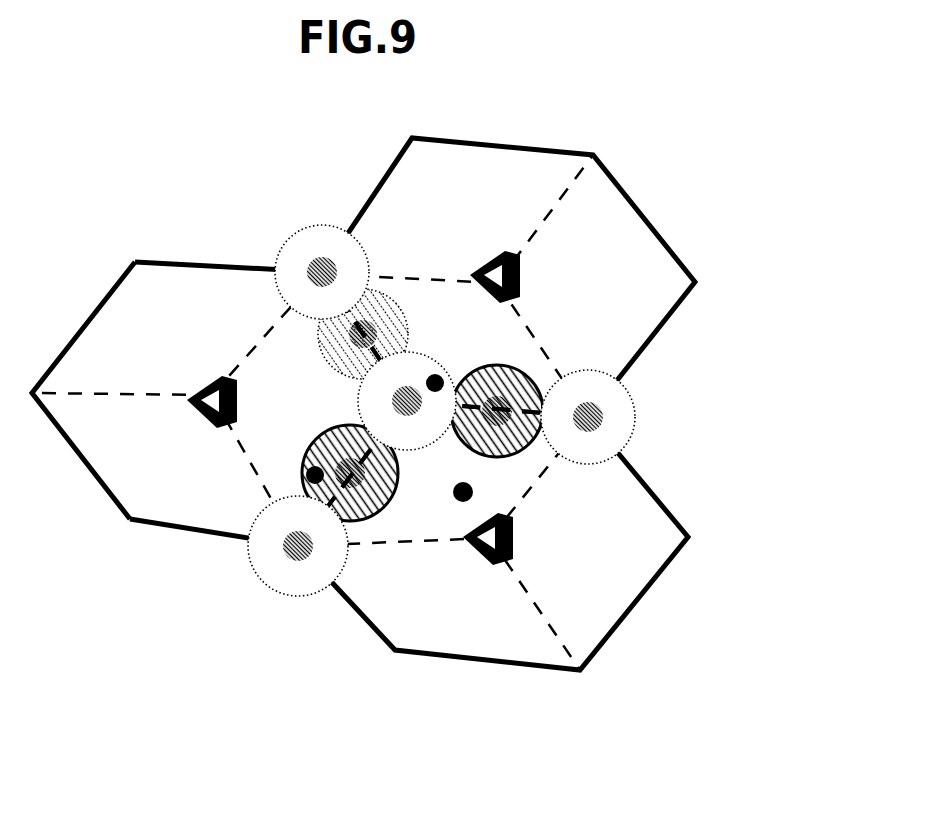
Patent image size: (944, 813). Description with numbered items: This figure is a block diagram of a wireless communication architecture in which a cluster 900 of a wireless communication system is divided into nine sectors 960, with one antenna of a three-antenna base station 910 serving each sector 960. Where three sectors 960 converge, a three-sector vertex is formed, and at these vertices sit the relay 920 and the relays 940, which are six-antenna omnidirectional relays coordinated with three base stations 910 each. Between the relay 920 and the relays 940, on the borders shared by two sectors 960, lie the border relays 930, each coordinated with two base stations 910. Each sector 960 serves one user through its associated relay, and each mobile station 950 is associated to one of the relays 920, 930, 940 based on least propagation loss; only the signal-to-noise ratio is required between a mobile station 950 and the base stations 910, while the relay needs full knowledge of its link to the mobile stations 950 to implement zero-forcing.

The cluster 900 is at (233, 97).
The base station 910 is at (210, 383).
The relay 920 is at (413, 383).
The relay 930 is at (337, 577).
The relay 940 is at (600, 410).
The mobile station 950 is at (463, 502).
The sector 960 is at (513, 185).